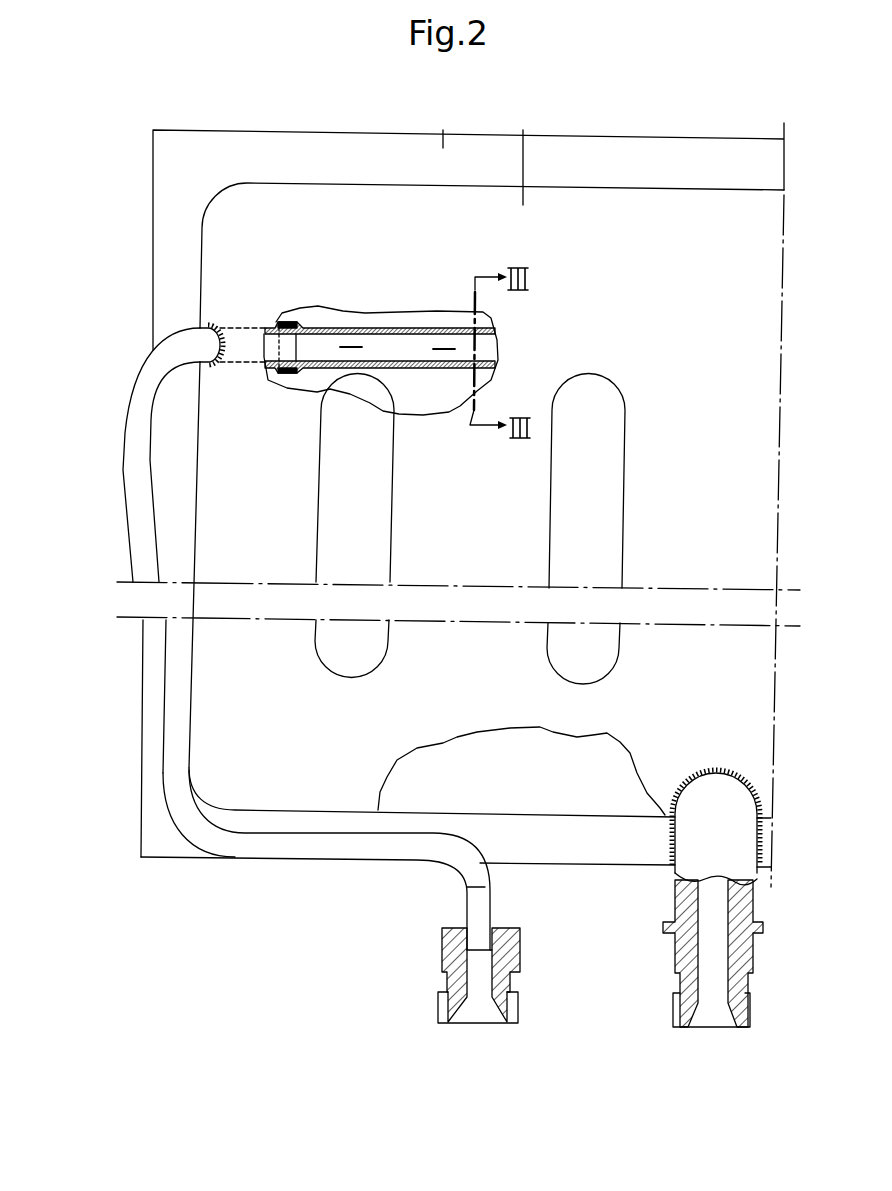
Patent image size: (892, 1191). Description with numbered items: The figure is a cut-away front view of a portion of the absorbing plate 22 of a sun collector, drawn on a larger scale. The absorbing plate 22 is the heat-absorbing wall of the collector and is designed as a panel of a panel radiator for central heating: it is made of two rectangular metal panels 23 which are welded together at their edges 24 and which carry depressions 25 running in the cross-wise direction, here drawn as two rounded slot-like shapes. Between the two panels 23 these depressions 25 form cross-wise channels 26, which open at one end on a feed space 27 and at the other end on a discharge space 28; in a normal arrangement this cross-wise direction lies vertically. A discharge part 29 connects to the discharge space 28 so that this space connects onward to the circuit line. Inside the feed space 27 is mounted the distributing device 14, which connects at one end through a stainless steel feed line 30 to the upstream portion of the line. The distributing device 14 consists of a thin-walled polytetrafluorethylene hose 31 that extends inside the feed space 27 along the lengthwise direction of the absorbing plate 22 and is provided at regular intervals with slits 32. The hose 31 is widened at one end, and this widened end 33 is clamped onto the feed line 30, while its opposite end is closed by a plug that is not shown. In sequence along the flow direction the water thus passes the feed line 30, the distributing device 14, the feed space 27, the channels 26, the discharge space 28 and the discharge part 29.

The distributing device 14 is at (305, 272).
The absorbing plate 22 is at (146, 229).
The rectangular metal panels 23 is at (522, 151).
The edges 24 is at (442, 123).
The depressions 25 is at (378, 528).
The channels 26 is at (498, 543).
The feed space 27 is at (378, 320).
The discharge space 28 is at (469, 792).
The discharge part 29 is at (715, 805).
The feed line 30 is at (147, 373).
The hose 31 is at (340, 345).
The slits 32 is at (335, 326).
The widened end 33 is at (285, 372).